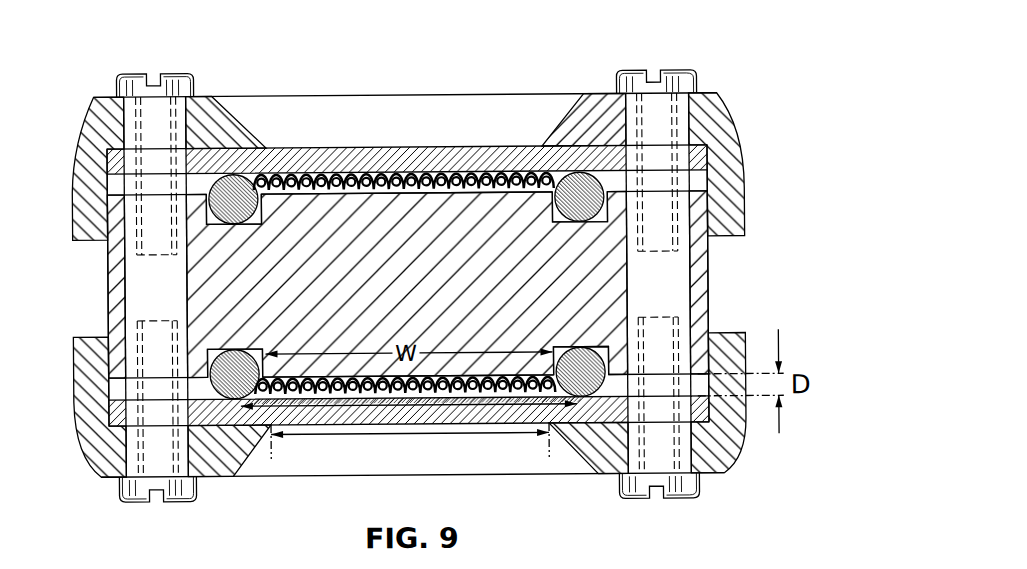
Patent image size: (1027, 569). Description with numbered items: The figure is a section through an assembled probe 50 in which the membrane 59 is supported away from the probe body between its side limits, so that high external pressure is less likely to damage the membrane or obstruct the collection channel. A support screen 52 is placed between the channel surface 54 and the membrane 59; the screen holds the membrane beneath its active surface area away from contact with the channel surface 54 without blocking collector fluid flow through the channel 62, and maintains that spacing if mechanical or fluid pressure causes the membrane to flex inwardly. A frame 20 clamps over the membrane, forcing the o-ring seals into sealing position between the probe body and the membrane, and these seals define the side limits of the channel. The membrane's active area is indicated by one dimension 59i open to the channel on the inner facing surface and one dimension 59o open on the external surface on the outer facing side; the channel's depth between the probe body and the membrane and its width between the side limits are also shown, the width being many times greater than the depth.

The probe 50 is at (216, 63).
The frame 20 is at (730, 119).
The membrane 59 is at (303, 147).
The support screen 52 is at (352, 180).
The channel 62 is at (472, 175).
The channel surface 54 is at (516, 187).
The inner facing active area dimension 59i is at (326, 400).
The outer facing active area dimension 59o is at (472, 434).